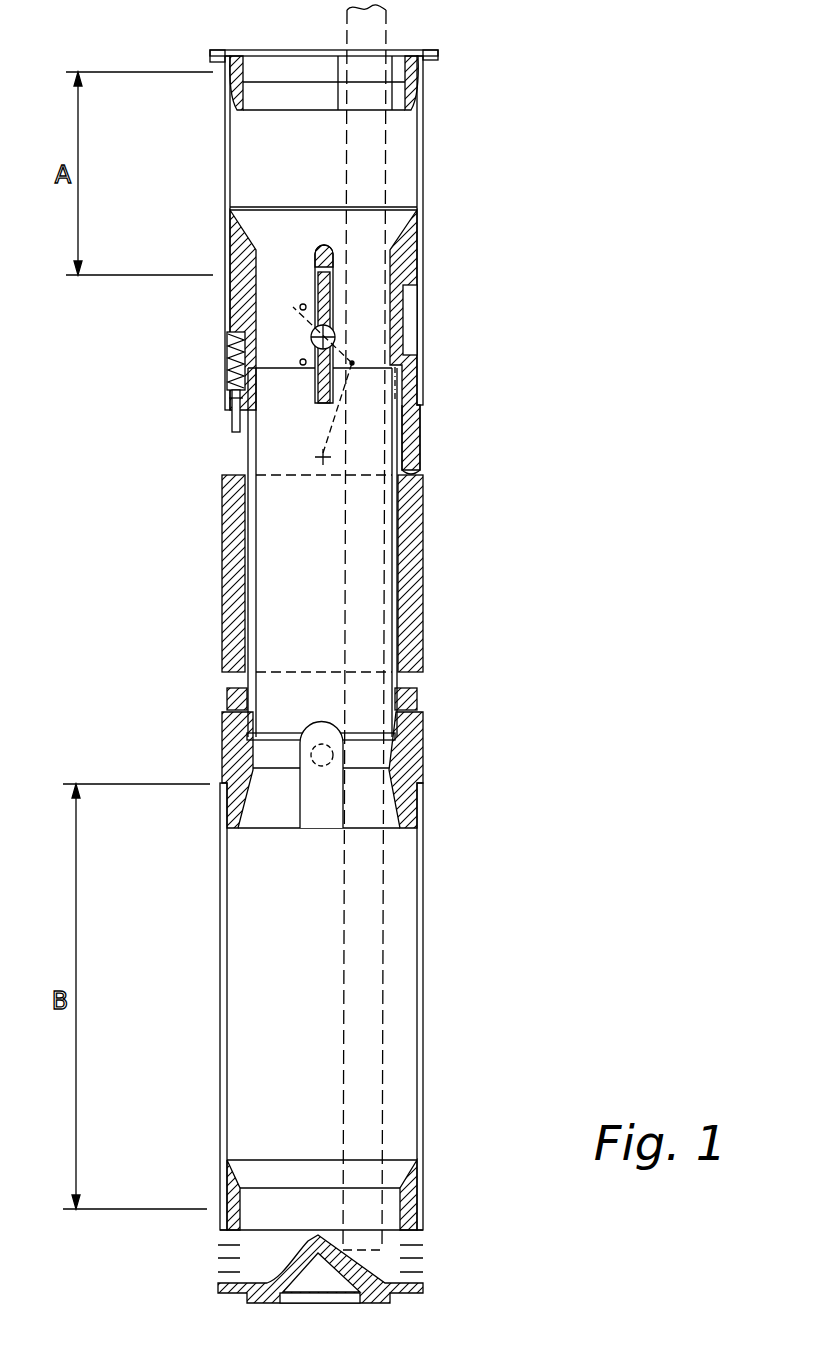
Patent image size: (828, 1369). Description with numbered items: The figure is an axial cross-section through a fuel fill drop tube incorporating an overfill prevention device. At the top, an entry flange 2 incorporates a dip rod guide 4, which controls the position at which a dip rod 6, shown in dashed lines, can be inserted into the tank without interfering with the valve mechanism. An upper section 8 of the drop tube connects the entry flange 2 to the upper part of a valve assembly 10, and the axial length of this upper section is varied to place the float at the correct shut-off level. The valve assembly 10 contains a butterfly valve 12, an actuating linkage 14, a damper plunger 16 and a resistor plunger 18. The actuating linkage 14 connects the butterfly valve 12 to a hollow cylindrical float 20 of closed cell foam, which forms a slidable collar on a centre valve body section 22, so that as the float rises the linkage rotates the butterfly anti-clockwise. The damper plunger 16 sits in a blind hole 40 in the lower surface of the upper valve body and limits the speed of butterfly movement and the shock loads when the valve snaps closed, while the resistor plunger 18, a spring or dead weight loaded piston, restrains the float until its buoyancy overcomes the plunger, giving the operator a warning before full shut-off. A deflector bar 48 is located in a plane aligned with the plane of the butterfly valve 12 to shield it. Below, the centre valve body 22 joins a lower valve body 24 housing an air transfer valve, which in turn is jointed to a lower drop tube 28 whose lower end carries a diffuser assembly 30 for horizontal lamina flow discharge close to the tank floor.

The entry flange 2 is at (425, 93).
The dip rod guide 4 is at (330, 98).
The dip rod 6 is at (387, 183).
The upper section of the drop tube 8 is at (228, 212).
The valve assembly 10 is at (223, 325).
The butterfly valve 12 is at (315, 407).
The actuating linkage 14 is at (343, 413).
The damper plunger 16 is at (410, 455).
The resistor plunger 18 is at (233, 423).
The hollow cylindrical float 20 is at (423, 593).
The centre valve body section 22 is at (227, 683).
The lower valve body 24 is at (423, 753).
The lower drop tube 28 is at (423, 940).
The diffuser assembly 30 is at (432, 1245).
The blind hole 40 is at (408, 323).
The deflector bar 48 is at (323, 247).